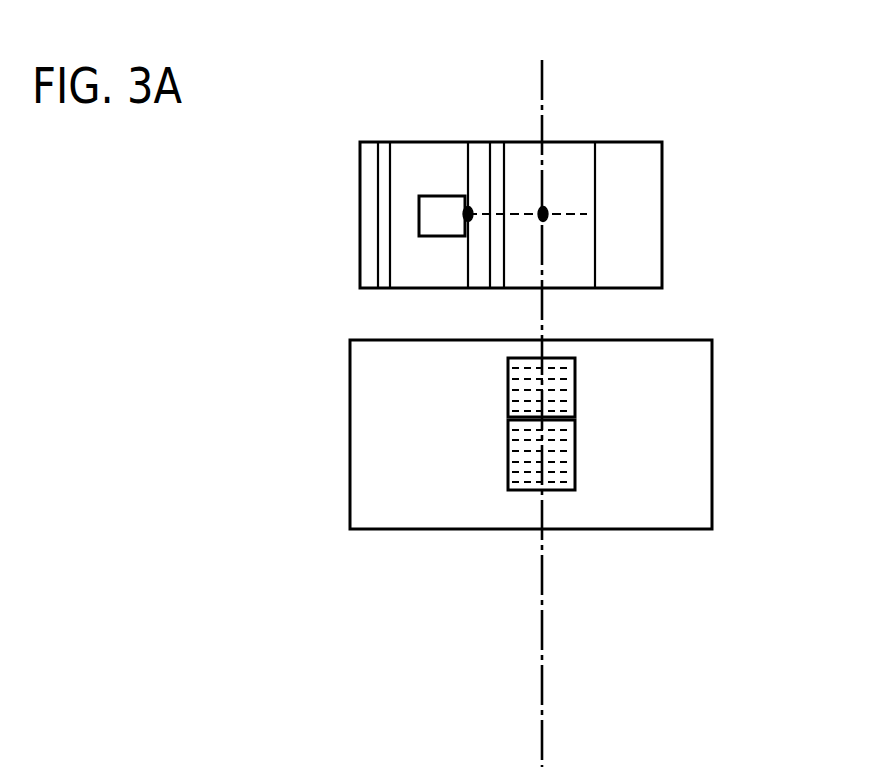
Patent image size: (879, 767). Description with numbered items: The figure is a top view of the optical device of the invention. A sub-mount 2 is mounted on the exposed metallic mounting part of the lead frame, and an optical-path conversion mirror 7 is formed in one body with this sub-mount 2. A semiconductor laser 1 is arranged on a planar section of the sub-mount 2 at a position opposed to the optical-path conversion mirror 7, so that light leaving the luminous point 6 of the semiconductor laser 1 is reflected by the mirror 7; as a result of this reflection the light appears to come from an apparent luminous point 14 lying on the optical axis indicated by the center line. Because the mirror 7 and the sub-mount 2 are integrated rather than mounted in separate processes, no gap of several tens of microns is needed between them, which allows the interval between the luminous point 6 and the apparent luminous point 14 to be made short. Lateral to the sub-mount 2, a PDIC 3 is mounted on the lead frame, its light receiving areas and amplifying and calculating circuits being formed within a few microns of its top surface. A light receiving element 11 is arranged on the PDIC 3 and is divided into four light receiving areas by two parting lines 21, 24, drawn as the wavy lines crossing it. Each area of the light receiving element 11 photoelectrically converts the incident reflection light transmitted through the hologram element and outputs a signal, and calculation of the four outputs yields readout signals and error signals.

The semiconductor laser 1 is at (433, 200).
The sub-mount 2 is at (368, 213).
The PDIC 3 is at (428, 487).
The luminous point 6 is at (469, 210).
The optical-path conversion mirror 7 is at (568, 172).
The light receiving element 11 is at (550, 458).
The apparent luminous point 14 is at (543, 212).
The parting line 21 is at (545, 393).
The parting line 24 is at (555, 392).